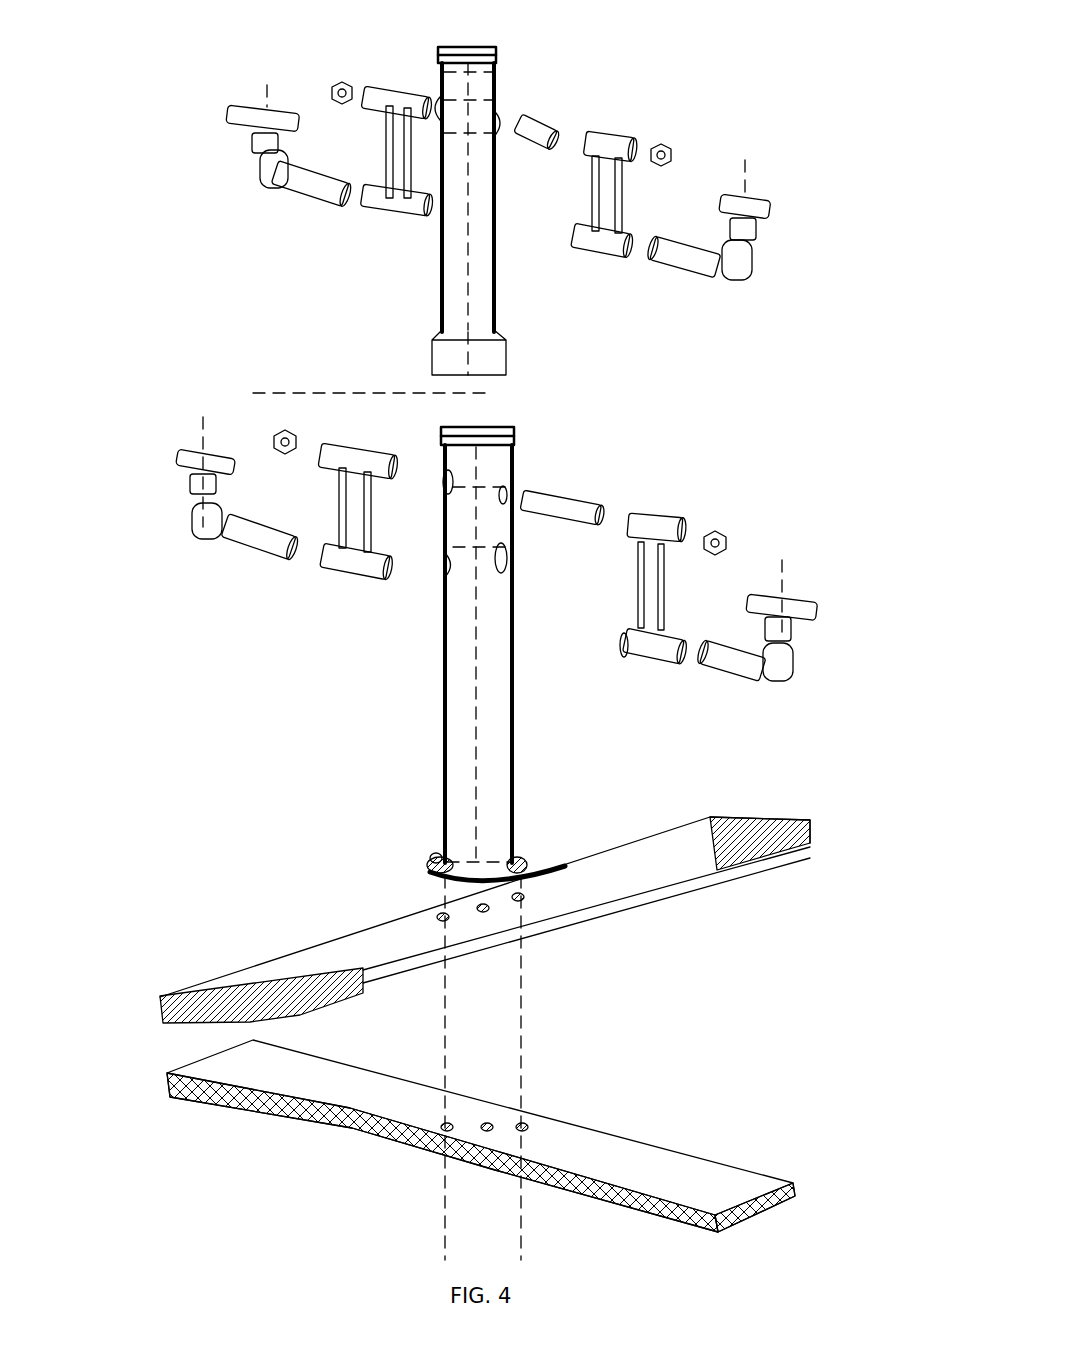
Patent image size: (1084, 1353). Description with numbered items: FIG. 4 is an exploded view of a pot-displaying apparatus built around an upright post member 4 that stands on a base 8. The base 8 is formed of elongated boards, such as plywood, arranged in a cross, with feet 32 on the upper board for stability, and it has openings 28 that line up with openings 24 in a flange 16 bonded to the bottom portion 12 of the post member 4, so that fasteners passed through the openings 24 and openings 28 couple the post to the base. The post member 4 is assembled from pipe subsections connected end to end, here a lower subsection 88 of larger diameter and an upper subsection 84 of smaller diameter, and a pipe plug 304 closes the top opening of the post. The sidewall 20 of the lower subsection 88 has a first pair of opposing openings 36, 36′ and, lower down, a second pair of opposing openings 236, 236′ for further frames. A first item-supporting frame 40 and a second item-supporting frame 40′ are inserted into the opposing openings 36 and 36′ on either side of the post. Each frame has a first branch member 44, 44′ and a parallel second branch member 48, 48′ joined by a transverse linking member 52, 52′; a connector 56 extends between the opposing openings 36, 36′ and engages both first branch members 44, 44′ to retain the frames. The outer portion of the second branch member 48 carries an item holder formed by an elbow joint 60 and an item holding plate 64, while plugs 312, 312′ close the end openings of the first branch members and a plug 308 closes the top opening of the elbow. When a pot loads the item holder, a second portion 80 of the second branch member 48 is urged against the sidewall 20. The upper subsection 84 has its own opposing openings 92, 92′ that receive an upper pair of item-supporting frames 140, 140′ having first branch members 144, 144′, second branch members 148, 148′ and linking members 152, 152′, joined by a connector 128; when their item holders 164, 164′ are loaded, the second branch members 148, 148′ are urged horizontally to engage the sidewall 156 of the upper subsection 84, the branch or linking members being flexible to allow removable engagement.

The post member 4 is at (647, 391).
The base 8 is at (817, 830).
The bottom portion of the post member 12 is at (511, 845).
The flange 16 is at (438, 855).
The sidewall of the post member 20 is at (513, 753).
The openings of the flange 24 is at (522, 866).
The openings of the base 28 is at (438, 920).
The feet 32 is at (747, 862).
The first opening 36 is at (503, 493).
The second opening 36′ is at (445, 470).
The first item-supporting frame 40 is at (823, 532).
The second item-supporting frame 40′ is at (210, 489).
The first branch member 44 is at (657, 532).
The first branch member of the second frame 44′ is at (347, 449).
The second branch member 48 is at (650, 657).
The second branch member of the second frame 48′ is at (352, 565).
The linking member 52 is at (653, 587).
The connecting rods 52′ is at (342, 498).
The connector 56 is at (567, 493).
The elbow joint 60 is at (788, 667).
The item holding plate 64 is at (790, 603).
The second portion of the second branch member 80 is at (620, 647).
The upper subsection 84 is at (483, 302).
The lower subsection 88 is at (463, 795).
The opening of the upper subsection 92 is at (492, 110).
The opposing opening of the upper subsection 92′ is at (438, 110).
The connector 128 is at (538, 130).
The upper arm assembly 140 is at (749, 98).
The upper arm assembly 140′ is at (254, 59).
The first branch member 144 is at (612, 138).
The first branch member 144′ is at (385, 97).
The second branch member 148 is at (593, 247).
The second branch member 148′ is at (393, 197).
The linking member 152 is at (605, 187).
The linking member 152′ is at (387, 153).
The sidewall of the upper subsection 156 is at (443, 273).
The item holder 164 is at (773, 203).
The item holder 164′ is at (225, 108).
The opening of the second pair 236 is at (508, 558).
The opposing opening of the second pair 236′ is at (445, 588).
The pipe plug 304 is at (480, 46).
The ABS plug 308 is at (198, 488).
The ABS plug 312 is at (718, 531).
The ABS plug 312′ is at (286, 432).